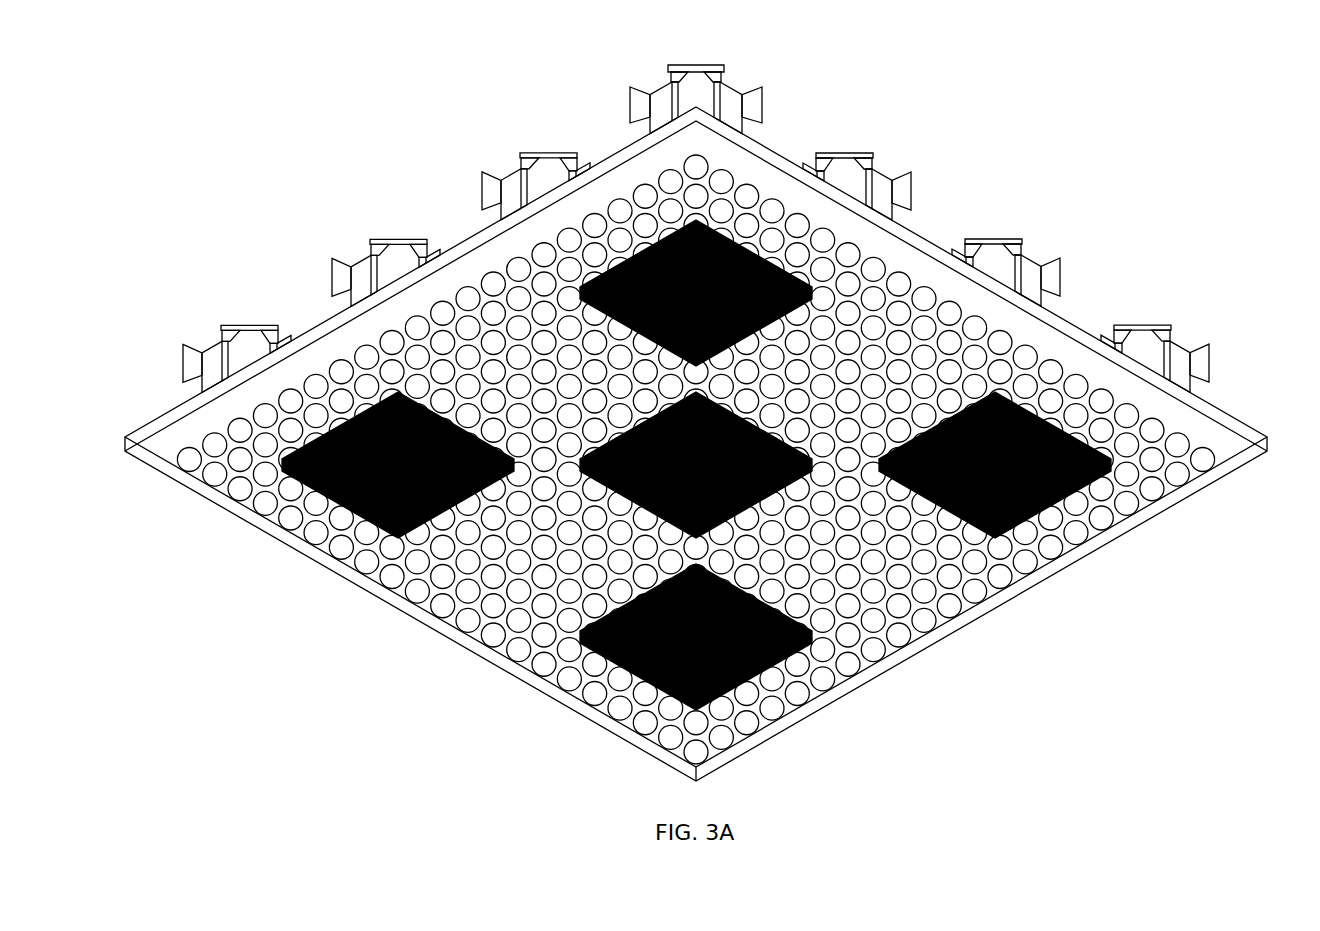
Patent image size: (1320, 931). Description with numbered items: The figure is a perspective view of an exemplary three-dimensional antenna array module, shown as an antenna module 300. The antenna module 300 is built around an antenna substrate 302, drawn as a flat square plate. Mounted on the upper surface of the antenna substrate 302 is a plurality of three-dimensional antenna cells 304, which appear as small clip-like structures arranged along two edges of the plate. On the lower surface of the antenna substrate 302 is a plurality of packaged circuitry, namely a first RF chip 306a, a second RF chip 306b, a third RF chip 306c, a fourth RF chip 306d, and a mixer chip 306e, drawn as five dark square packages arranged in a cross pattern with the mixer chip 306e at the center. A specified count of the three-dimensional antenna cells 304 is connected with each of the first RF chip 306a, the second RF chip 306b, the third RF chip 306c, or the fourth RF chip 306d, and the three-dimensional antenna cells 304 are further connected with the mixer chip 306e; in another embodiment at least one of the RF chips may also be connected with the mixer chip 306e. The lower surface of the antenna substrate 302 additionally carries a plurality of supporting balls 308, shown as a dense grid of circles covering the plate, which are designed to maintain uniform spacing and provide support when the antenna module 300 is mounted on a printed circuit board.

The antenna module 300 is at (700, 406).
The antenna substrate 302 is at (1267, 451).
The plurality of 3-D antenna cells 304 is at (745, 86).
The first RF chip 306a is at (350, 510).
The second RF chip 306b is at (757, 250).
The third RF chip 306c is at (1065, 508).
The fourth RF chip 306d is at (630, 670).
The mixer chip 306e is at (773, 490).
The plurality of supporting balls 308 is at (190, 477).